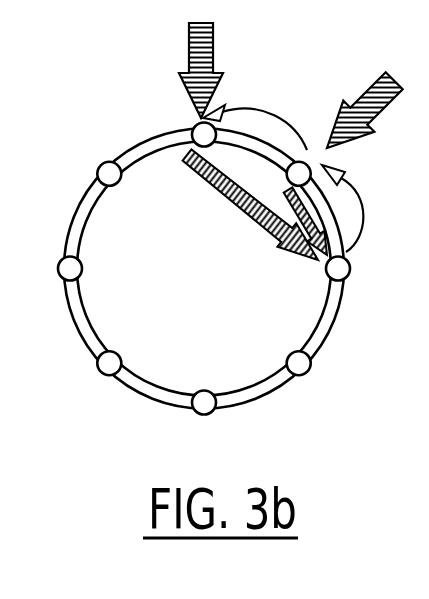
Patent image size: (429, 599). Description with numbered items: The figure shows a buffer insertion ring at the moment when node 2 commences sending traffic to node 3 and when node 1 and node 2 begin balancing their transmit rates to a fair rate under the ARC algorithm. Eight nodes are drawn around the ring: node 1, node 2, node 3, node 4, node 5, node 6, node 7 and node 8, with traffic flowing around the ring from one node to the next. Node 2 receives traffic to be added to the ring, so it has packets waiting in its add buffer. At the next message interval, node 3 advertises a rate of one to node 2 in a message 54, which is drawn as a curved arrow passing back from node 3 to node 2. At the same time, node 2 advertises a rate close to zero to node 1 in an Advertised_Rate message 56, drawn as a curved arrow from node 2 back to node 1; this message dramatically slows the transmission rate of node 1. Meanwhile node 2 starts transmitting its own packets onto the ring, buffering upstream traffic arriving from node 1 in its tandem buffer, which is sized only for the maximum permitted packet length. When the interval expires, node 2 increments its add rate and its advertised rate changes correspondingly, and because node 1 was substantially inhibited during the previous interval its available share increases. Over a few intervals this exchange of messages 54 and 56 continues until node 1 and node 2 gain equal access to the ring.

The node 1 is at (190, 113).
The node 2 is at (305, 157).
The node 3 is at (348, 267).
The node 4 is at (305, 379).
The node 5 is at (204, 421).
The node 6 is at (105, 380).
The node 7 is at (60, 272).
The node 8 is at (101, 160).
The message 54 is at (364, 222).
The Advertised_Rate message 56 is at (278, 118).